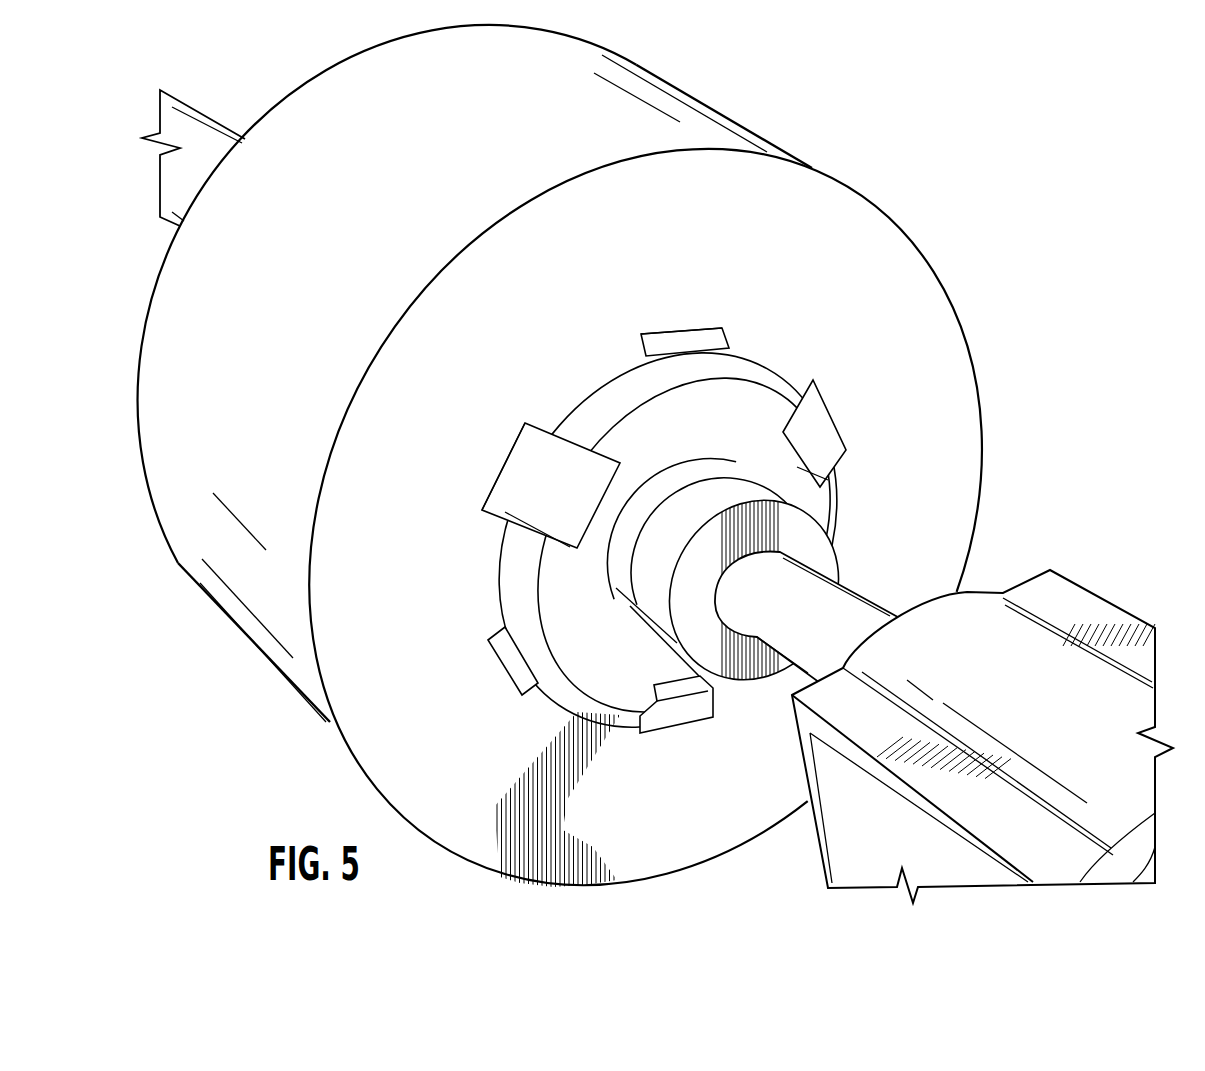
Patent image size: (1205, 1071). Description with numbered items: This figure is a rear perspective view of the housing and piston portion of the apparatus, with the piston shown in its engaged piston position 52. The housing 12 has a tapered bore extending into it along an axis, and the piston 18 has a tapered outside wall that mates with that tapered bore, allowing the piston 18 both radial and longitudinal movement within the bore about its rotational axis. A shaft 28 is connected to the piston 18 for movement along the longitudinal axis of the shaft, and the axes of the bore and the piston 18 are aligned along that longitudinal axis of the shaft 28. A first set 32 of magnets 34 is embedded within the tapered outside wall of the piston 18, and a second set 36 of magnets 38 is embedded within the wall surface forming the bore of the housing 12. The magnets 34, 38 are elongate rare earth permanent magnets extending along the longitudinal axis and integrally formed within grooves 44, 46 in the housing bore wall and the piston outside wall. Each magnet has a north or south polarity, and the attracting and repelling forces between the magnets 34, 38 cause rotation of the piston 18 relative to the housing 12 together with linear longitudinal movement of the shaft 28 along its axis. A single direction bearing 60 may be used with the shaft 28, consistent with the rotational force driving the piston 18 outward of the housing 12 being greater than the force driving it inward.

The housing 12 is at (743, 212).
The piston 18 is at (587, 661).
The shaft 28 is at (836, 620).
The first set of magnets 32 is at (782, 453).
The magnet 34 is at (558, 510).
The second set of magnets 36 is at (653, 322).
The magnet 38 is at (707, 338).
The groove 44 is at (723, 324).
The groove 46 is at (700, 404).
The engaged piston position 52 is at (626, 150).
The single direction bearing 60 is at (832, 706).